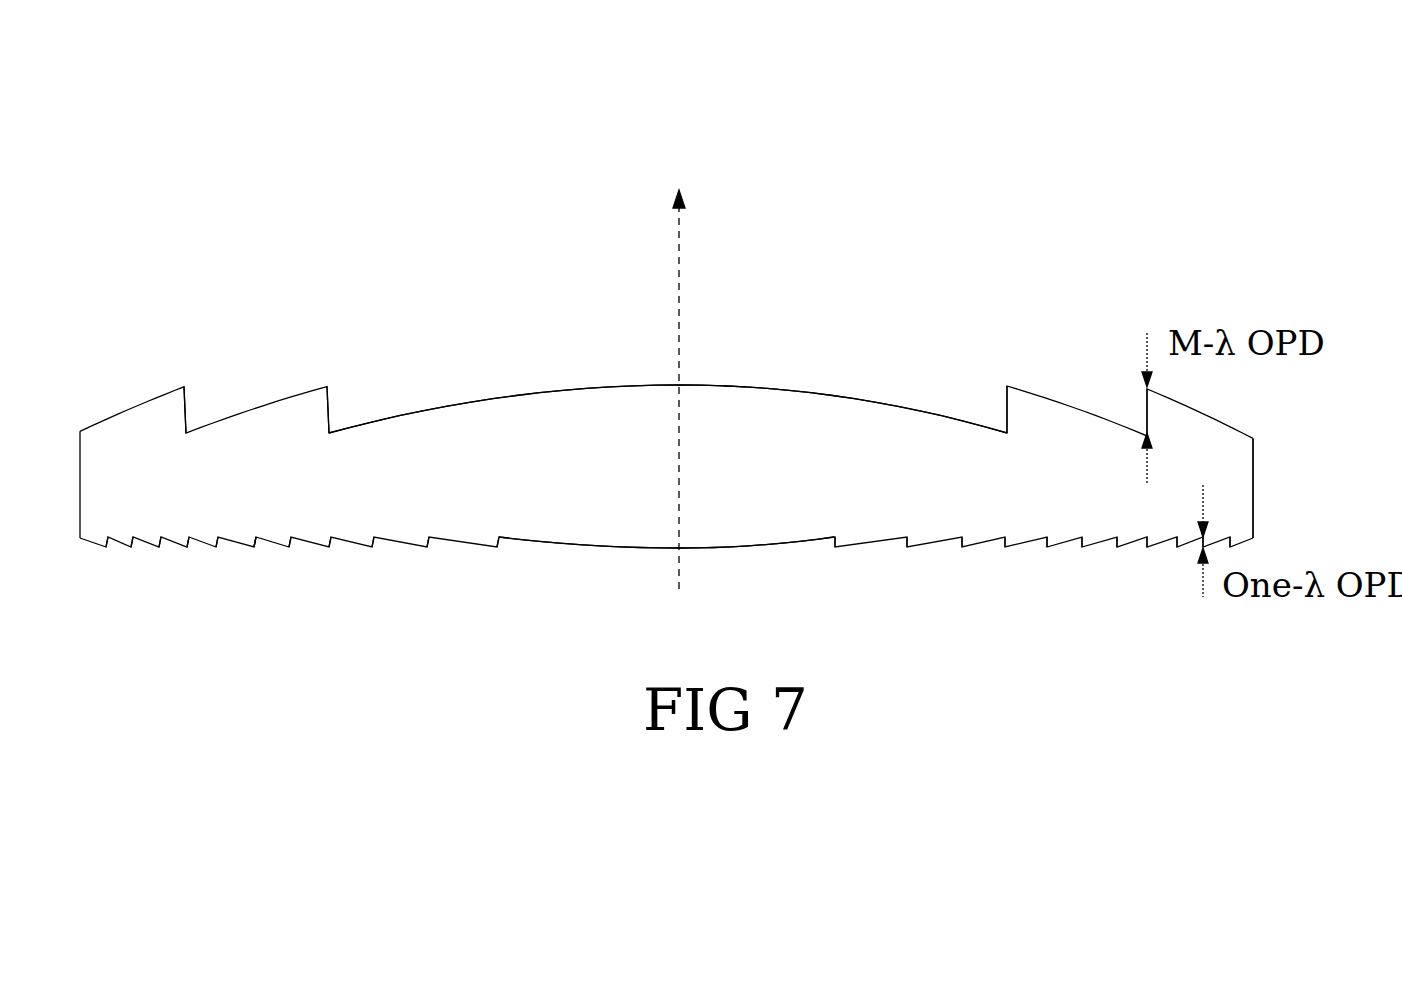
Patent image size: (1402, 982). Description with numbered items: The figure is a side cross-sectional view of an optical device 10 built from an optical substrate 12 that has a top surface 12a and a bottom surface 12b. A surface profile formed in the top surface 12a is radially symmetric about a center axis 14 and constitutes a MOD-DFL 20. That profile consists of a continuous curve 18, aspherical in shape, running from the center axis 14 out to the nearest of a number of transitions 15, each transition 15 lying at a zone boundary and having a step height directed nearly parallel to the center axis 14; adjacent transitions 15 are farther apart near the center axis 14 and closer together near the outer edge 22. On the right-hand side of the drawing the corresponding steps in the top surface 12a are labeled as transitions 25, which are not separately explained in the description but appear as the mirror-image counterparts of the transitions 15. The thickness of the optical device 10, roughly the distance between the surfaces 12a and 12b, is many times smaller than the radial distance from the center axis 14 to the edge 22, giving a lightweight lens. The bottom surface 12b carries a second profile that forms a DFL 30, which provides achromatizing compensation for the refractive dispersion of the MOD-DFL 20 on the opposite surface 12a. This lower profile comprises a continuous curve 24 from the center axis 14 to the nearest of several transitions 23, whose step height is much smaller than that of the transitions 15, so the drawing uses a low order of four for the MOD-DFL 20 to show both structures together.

The optical device 10 is at (247, 168).
The optical substrate 12 is at (666, 484).
The top surface 12a is at (866, 420).
The bottom surface 12b is at (798, 522).
The center axis 14 is at (680, 262).
The transitions 15 is at (192, 408).
The continuous curve 18 is at (632, 383).
The MOD-DFL 20 is at (736, 387).
The edge 22 is at (1253, 480).
The transitions 23 is at (110, 545).
The continuous curve 24 is at (651, 548).
The anterior surface step 25 is at (1003, 408).
The DFL 30 is at (247, 552).